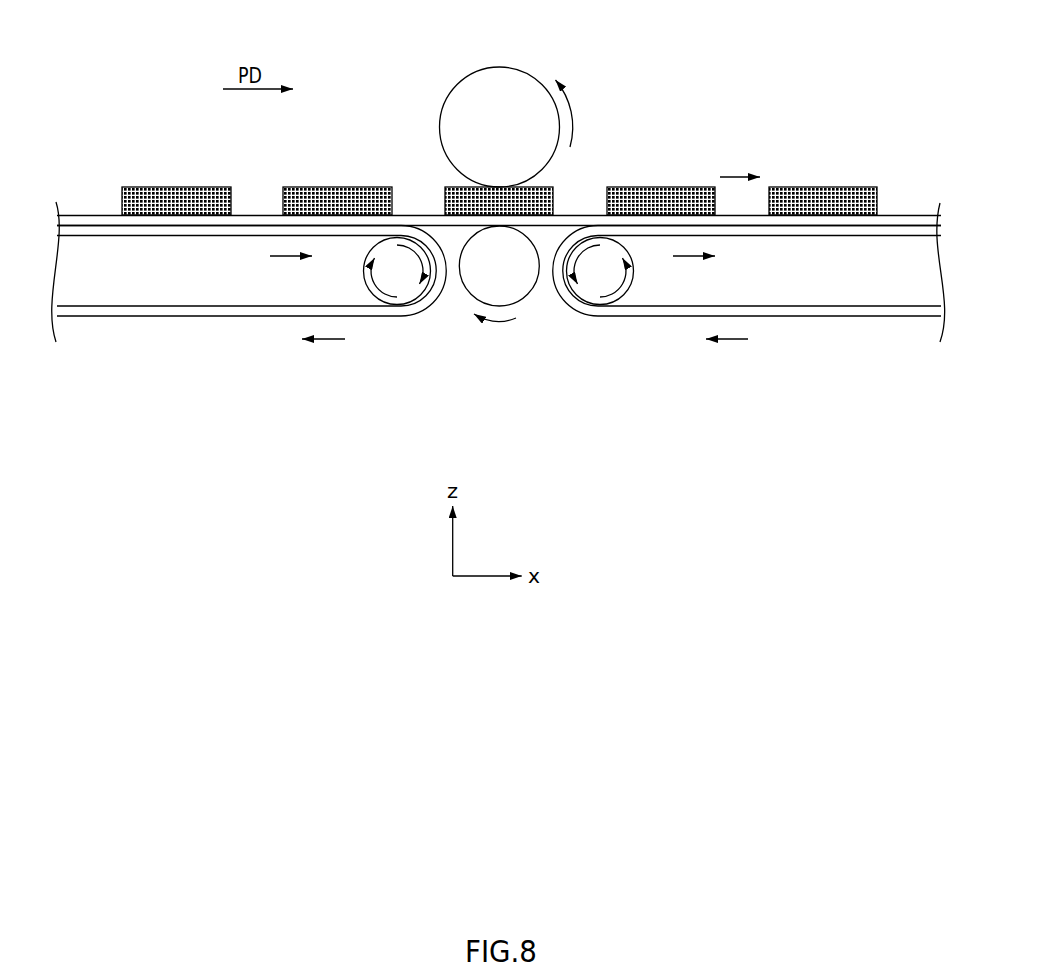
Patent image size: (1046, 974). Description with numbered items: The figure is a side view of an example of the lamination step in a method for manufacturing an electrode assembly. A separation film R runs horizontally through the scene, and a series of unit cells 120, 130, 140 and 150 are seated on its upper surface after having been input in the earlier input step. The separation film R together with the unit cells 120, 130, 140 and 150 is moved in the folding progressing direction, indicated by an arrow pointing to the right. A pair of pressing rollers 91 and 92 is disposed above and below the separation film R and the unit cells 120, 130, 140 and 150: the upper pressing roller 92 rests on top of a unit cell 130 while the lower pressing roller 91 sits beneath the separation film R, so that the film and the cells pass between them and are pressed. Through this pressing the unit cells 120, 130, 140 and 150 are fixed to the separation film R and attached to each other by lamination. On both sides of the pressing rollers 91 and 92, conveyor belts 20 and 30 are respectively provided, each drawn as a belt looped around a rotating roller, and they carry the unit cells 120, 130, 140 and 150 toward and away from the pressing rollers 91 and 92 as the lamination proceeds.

The separation film R is at (87, 215).
The unit cell 150 is at (173, 187).
The unit cell 140 is at (334, 187).
The unit cell 130 is at (543, 200).
The unit cell 120 is at (658, 187).
The pressing roller 92 is at (497, 66).
The pressing roller 91 is at (526, 297).
The conveyor belt 20 is at (205, 343).
The conveyor belt 30 is at (791, 345).